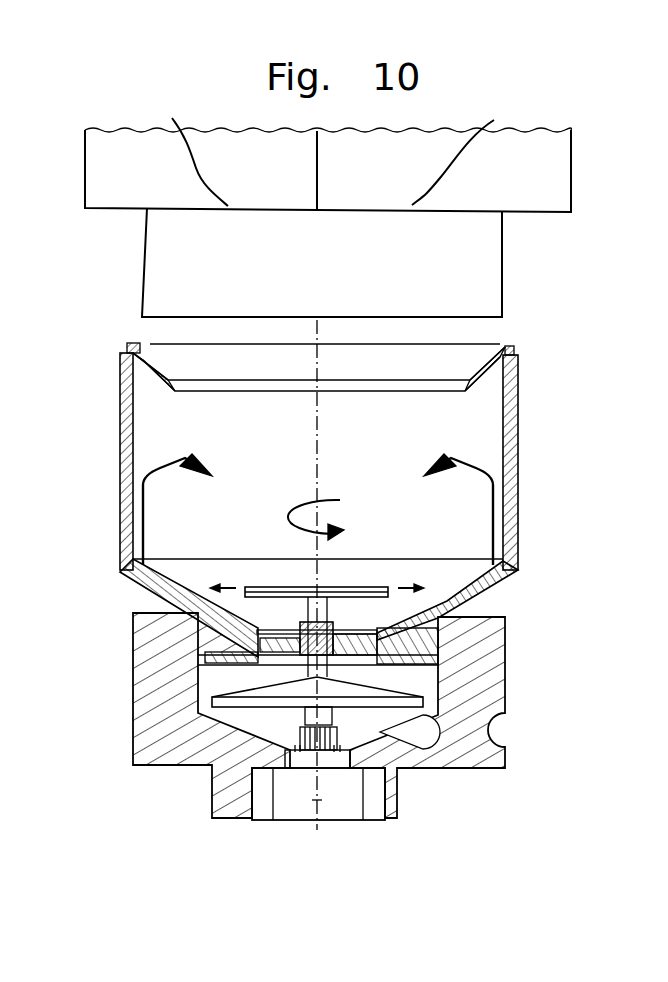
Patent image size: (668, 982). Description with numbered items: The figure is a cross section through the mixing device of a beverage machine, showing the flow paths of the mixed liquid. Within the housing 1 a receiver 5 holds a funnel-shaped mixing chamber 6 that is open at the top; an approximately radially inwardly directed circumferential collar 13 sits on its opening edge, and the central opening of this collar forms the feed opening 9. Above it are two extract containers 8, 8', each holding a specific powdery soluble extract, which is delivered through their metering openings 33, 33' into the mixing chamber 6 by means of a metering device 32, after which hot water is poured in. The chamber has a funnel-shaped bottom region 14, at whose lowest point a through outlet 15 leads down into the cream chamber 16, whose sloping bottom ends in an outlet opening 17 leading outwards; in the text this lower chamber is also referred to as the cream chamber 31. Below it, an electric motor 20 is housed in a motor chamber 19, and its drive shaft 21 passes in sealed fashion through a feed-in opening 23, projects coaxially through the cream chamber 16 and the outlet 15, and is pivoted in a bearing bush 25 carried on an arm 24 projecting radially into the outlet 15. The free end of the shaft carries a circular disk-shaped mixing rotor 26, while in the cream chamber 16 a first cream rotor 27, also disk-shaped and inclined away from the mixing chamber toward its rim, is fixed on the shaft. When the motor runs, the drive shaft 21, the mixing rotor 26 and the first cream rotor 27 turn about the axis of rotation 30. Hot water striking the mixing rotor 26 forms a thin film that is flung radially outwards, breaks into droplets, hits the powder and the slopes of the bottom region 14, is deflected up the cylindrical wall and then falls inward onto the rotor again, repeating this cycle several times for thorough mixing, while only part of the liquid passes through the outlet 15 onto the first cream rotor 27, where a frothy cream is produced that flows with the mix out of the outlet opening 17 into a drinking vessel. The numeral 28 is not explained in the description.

The housing 1 is at (410, 733).
The receiver 5 is at (367, 760).
The mixing chamber 6 is at (222, 408).
The extract container 8 is at (285, 170).
The extract container 8' is at (606, 175).
The feed opening 9 is at (377, 395).
The circumferential collar 13 is at (480, 375).
The funnel-shaped bottom region 14 is at (199, 576).
The outlet 15 is at (390, 637).
The cream chamber 16 is at (222, 680).
The outlet opening 17 is at (430, 752).
The motor chamber 19 is at (253, 797).
The electric motor 20 is at (322, 800).
The drive shaft 21 is at (322, 745).
The feed-in opening 23 is at (307, 742).
The arm 24 is at (222, 649).
The bearing bush 25 is at (345, 655).
The mixing rotor 26 is at (372, 592).
The first cream rotor 27 is at (420, 704).
The funnel wall 28 is at (467, 618).
The axis of rotation 30 is at (315, 335).
The cream chamber 31 is at (210, 775).
The metering device 32 is at (481, 239).
The metering opening 33 is at (185, 152).
The metering opening 33' is at (471, 151).